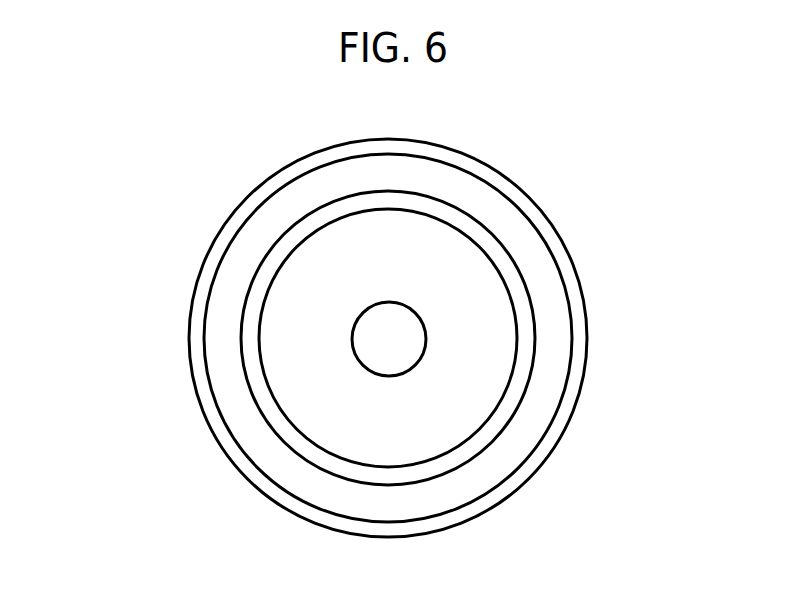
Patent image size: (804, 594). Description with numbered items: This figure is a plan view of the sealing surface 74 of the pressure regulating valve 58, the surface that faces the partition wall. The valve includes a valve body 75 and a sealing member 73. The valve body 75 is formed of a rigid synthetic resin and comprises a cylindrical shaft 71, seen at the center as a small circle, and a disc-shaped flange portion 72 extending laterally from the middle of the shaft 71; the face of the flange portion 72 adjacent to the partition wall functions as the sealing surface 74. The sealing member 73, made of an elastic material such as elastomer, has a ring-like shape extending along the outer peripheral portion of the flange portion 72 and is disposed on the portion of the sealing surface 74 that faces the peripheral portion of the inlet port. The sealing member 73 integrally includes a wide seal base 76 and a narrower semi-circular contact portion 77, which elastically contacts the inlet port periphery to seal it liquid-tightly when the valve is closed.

The pressure regulating valve 58 is at (222, 208).
The shaft 71 is at (426, 339).
The flange portion 72 is at (287, 338).
The sealing member 73 is at (446, 338).
The sealing surface 74 is at (287, 338).
The valve body 75 is at (297, 303).
The seal base 76 is at (548, 228).
The contact portion 77 is at (441, 338).